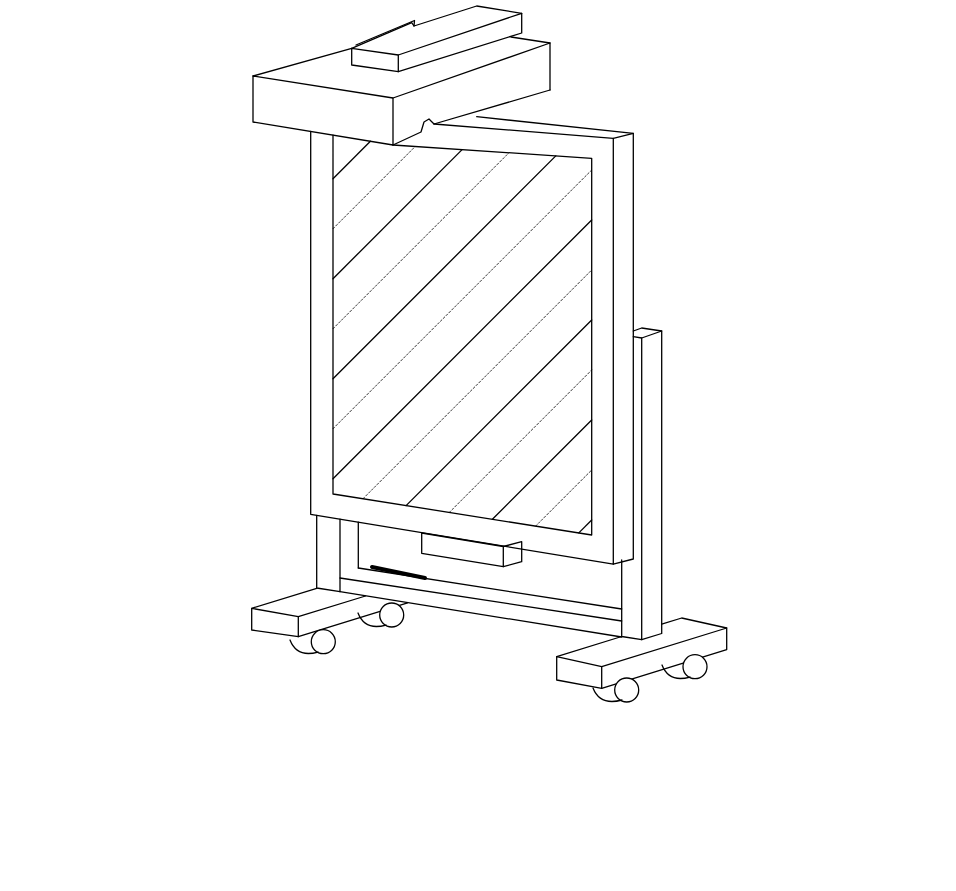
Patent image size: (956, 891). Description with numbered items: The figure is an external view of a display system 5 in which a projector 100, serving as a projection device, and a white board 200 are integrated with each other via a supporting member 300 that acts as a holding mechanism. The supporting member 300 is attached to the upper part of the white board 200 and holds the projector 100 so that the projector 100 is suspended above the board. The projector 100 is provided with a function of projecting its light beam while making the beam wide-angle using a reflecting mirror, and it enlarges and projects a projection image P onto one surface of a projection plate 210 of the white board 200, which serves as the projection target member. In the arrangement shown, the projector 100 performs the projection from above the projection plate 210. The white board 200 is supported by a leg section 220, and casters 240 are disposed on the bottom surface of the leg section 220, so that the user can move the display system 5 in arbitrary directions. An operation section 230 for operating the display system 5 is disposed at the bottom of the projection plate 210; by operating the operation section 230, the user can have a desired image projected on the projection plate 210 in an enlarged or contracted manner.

The display system 5 is at (110, 68).
The projector 100 is at (247, 94).
The supporting member 300 is at (345, 48).
The white board 200 is at (307, 202).
The projection plate 210 is at (322, 295).
The projection image P is at (603, 265).
The leg section 220 is at (657, 582).
The operation section 230 is at (421, 541).
The casters 240 is at (708, 667).